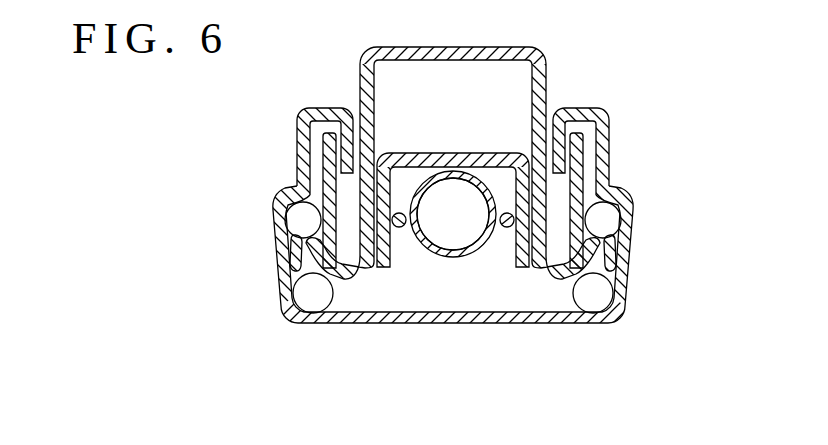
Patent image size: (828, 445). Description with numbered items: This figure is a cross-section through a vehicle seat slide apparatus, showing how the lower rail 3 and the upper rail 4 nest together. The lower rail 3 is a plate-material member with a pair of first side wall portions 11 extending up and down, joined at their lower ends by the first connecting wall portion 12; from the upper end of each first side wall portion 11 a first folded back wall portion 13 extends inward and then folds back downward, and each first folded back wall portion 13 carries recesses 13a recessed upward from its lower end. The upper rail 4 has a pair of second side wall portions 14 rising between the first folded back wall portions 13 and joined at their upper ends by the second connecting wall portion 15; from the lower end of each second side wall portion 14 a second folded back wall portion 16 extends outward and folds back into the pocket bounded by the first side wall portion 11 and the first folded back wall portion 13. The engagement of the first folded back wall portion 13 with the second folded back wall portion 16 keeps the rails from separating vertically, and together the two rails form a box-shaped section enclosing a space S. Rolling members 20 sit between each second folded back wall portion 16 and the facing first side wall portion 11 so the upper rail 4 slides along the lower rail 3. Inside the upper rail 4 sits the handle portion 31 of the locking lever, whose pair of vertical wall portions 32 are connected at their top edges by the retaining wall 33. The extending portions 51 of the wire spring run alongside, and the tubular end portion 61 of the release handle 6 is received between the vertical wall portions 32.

The lower rail 3 is at (583, 325).
The upper rail 4 is at (543, 60).
The release handle 6 is at (500, 304).
The first side wall portion 11 is at (282, 278).
The first connecting wall portion 12 is at (439, 325).
The first folded back wall portion 13 is at (327, 108).
The recess 13a is at (330, 170).
The second side wall portion 14 is at (360, 78).
The second connecting wall portion 15 is at (447, 52).
The second folded back wall portion 16 is at (310, 123).
The rolling member 20 is at (288, 252).
The handle portion 31 is at (425, 153).
The vertical wall portion 32 is at (383, 262).
The retaining wall 33 is at (450, 153).
The extending portion 51 is at (399, 228).
The end portion 61 is at (453, 258).
The space S is at (512, 109).